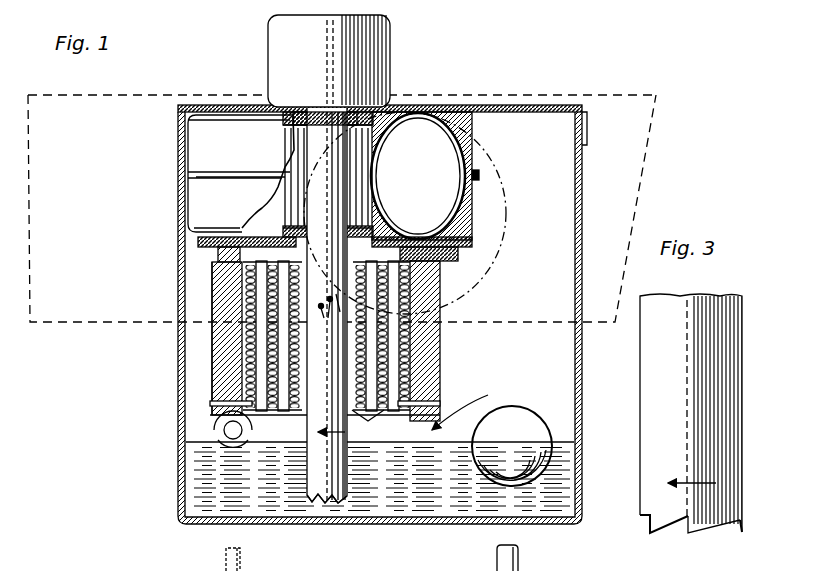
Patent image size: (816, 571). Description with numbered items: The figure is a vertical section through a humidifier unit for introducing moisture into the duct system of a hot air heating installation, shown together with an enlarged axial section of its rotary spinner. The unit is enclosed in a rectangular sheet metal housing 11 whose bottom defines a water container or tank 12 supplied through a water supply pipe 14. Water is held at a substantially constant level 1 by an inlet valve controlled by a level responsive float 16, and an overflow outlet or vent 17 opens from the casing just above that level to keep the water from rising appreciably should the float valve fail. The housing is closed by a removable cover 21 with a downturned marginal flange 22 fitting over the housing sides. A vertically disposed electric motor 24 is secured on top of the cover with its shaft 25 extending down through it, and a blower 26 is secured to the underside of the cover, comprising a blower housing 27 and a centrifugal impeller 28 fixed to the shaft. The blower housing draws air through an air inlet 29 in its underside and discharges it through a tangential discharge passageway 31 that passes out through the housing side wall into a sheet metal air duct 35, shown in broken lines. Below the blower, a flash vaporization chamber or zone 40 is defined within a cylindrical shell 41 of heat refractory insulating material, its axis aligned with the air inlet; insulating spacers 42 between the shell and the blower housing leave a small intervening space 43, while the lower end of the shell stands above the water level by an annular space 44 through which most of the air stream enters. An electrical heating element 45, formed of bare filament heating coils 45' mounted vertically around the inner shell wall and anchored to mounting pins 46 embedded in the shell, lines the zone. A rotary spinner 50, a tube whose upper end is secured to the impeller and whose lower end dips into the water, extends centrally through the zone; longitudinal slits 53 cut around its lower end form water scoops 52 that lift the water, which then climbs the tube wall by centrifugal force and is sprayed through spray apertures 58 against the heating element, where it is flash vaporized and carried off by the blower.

In FIG. 1, the water level 1 is at (176, 441).
In FIG. 1, the sheet metal housing 11 is at (182, 292).
In FIG. 1, the water container or tank 12 is at (200, 495).
In FIG. 1, the water supply pipe 14 is at (497, 558).
In FIG. 1, the level responsive float 16 is at (522, 412).
In FIG. 1, the overflow outlet or vent 17 is at (230, 430).
In FIG. 1, the cover 21 is at (210, 105).
In FIG. 1, the downturned marginal flange 22 is at (180, 136).
In FIG. 1, the electric motor 24 is at (283, 36).
In FIG. 1, the motor shaft 25 is at (330, 110).
In FIG. 1, the blower 26 is at (195, 188).
In FIG. 1, the blower housing 27 is at (244, 151).
In FIG. 1, the centrifugal impeller 28 is at (256, 171).
In FIG. 1, the air inlet 29 is at (372, 222).
In FIG. 1, the tangential discharge passageway 31 is at (470, 139).
In FIG. 1, the sheet metal air duct 35 is at (76, 95).
In FIG. 1, the flash vaporization chamber or zone 40 is at (240, 352).
In FIG. 1, the cylindrical shell 41 is at (212, 369).
In FIG. 1, the insulating spacers 42 is at (205, 240).
In FIG. 1, the intervening space 43 is at (216, 256).
In FIG. 1, the annular space 44 is at (471, 401).
In FIG. 1, the electrical heating element 45 is at (363, 336).
In FIG. 1, the bare filament heating coils 45' is at (372, 428).
In FIG. 1, the mounting pins 46 is at (210, 403).
In FIG. 1, the rotary spinner 50 is at (330, 183).
In FIG. 3, the rotary spinner 50 is at (690, 385).
In FIG. 1, the water scoops 52 is at (341, 503).
In FIG. 3, the water scoops 52 is at (665, 527).
In FIG. 3, the longitudinal slits 53 is at (687, 532).
In FIG. 1, the spray apertures 58 is at (326, 315).